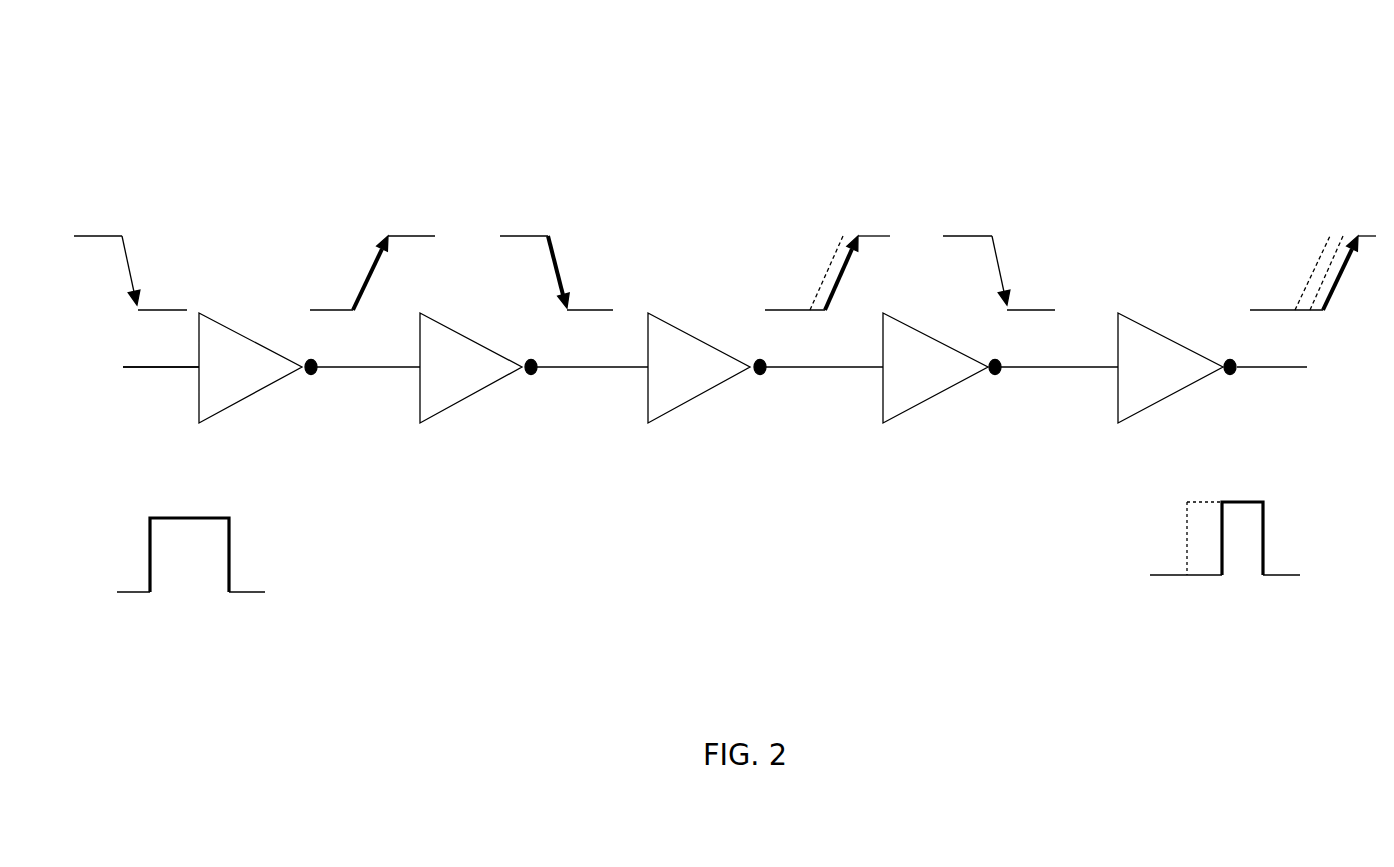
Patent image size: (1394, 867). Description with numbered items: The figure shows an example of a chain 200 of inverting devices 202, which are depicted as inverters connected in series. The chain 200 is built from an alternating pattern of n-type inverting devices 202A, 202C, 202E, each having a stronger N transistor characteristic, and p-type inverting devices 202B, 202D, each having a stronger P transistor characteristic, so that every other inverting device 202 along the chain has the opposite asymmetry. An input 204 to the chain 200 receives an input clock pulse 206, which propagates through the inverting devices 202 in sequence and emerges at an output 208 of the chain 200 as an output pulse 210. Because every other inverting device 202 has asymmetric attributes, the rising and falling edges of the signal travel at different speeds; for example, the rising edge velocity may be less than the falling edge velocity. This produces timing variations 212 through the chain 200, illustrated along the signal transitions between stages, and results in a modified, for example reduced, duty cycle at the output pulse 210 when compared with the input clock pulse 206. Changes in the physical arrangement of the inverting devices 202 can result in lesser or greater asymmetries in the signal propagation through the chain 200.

The chain 200 is at (753, 60).
The inverting devices 202 is at (660, 285).
The n-type inverting device 202A is at (270, 387).
The p-type inverting device 202B is at (513, 380).
The n-type inverting device 202C is at (733, 380).
The p-type inverting device 202D is at (962, 380).
The n-type inverting device 202E is at (1202, 380).
The input 204 is at (180, 367).
The input clock pulse 206 is at (260, 627).
The output 208 is at (1258, 367).
The output pulse 210 is at (1208, 522).
The timing variations 212 is at (823, 217).